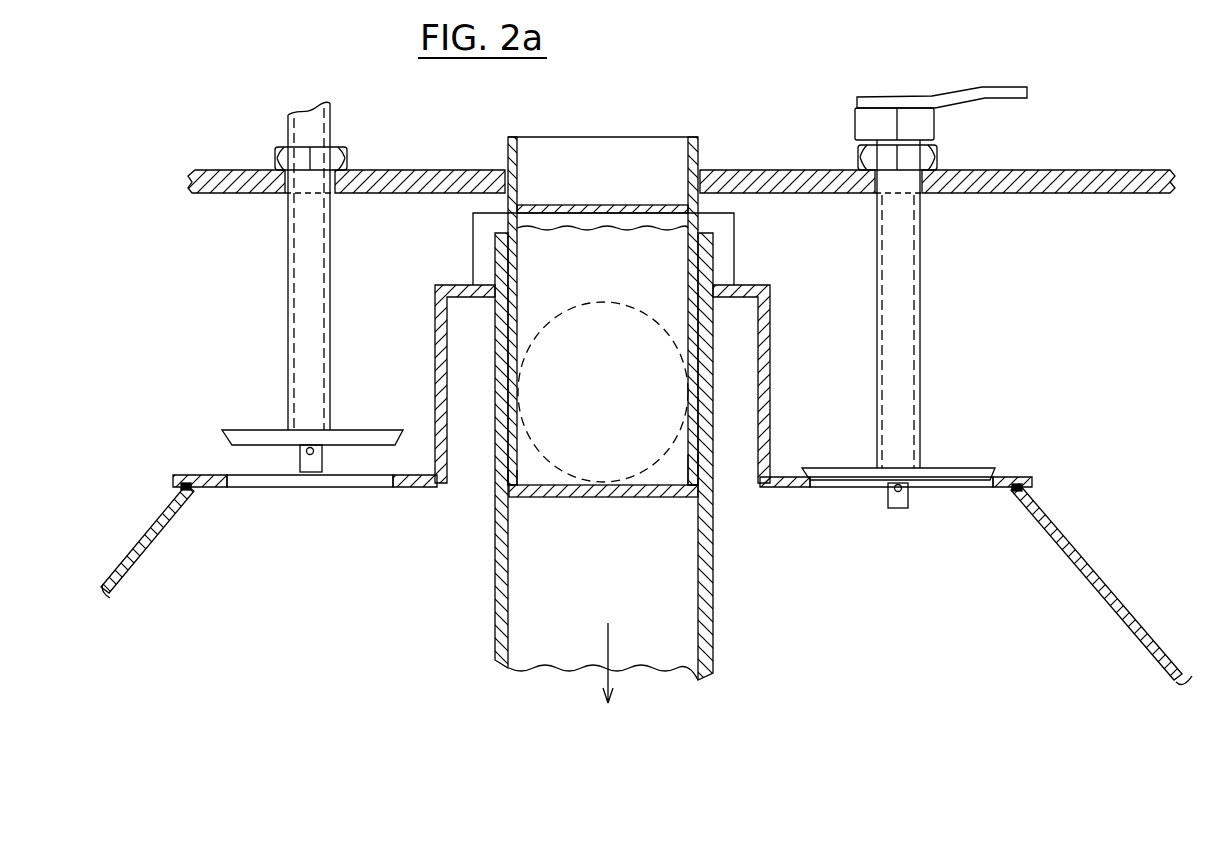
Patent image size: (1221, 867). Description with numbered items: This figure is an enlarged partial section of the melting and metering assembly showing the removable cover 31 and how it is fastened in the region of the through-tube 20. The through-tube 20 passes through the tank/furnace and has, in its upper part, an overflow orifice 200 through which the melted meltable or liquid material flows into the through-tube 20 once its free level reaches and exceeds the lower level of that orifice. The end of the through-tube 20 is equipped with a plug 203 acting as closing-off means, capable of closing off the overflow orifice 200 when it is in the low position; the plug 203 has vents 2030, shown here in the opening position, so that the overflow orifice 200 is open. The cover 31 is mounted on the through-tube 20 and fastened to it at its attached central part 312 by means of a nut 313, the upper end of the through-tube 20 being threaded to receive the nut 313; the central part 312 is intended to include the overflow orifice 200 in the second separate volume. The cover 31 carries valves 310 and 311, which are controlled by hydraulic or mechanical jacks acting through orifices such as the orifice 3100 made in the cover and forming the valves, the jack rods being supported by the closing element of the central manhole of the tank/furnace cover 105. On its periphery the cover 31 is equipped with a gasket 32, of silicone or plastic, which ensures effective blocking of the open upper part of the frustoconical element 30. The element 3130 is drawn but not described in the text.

The closing cover 105 is at (414, 172).
The plug 203 is at (598, 205).
The nut 313 is at (724, 233).
The attached central part 312 is at (770, 330).
The valve 311 is at (905, 322).
The valve 310 is at (291, 430).
The removable cover 31 is at (638, 348).
The gasket 32 is at (1021, 476).
The orifice 3100 is at (258, 479).
The right base plate 3130 is at (962, 488).
The frustoconical element 30 is at (141, 546).
The vents 2030 is at (500, 482).
The overflow orifice 200 is at (680, 497).
The through-tube 20 is at (708, 632).